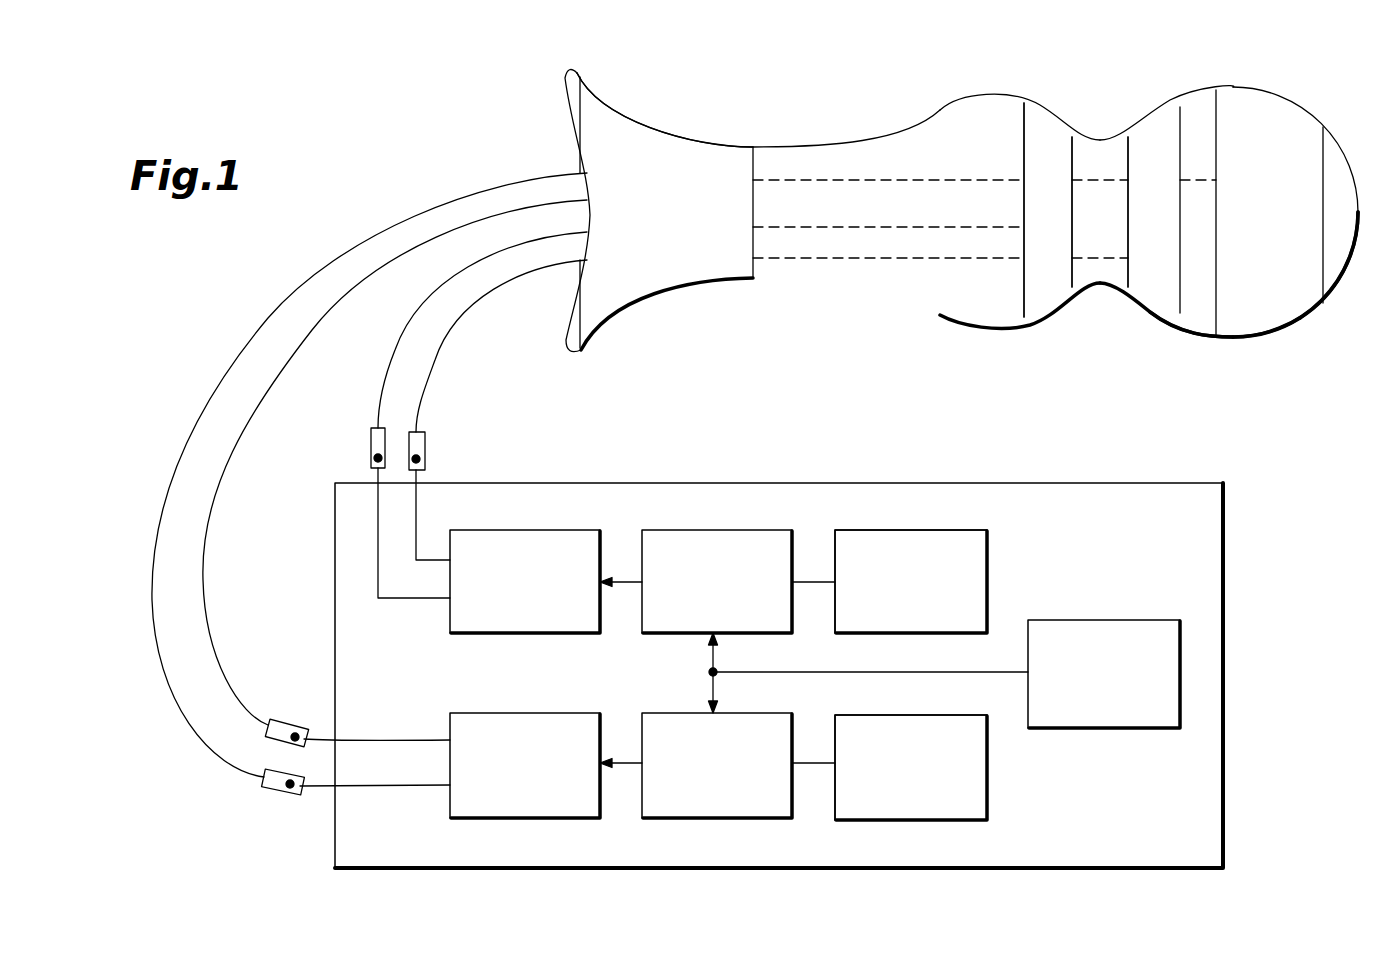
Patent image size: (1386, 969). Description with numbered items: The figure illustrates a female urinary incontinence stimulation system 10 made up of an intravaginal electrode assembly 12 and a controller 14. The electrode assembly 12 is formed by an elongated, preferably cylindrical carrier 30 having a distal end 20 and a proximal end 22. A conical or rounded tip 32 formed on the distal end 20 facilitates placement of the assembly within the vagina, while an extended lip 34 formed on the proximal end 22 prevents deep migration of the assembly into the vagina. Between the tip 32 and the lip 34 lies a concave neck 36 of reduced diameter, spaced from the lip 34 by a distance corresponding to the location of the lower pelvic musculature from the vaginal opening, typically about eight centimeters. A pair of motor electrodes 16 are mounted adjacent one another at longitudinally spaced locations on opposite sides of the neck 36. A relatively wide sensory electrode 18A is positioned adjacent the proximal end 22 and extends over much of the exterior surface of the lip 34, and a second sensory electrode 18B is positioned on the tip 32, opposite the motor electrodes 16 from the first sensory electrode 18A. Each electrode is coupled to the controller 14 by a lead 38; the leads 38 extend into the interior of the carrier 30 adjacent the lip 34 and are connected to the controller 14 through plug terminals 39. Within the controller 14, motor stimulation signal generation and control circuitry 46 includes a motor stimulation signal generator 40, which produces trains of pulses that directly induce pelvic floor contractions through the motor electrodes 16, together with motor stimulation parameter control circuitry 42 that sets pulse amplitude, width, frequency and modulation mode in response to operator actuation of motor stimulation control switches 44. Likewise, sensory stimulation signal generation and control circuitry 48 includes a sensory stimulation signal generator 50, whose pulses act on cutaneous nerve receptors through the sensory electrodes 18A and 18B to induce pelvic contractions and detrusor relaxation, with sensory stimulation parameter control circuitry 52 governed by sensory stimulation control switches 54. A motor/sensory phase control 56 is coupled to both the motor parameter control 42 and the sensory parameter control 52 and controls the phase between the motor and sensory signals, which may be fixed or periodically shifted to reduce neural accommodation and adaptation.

The female urinary incontinence stimulation system 10 is at (760, 430).
The intravaginal electrode assembly 12 is at (848, 143).
The controller 14 is at (838, 654).
The motor electrodes 16 is at (1047, 320).
The sensory electrode 18A is at (725, 282).
The sensory electrode 18B is at (1265, 340).
The distal end 20 is at (1336, 306).
The proximal end 22 is at (668, 134).
The carrier 30 is at (962, 100).
The tip 32 is at (1333, 130).
The extended lip 34 is at (562, 73).
The concave neck 36 is at (1100, 138).
The lead 38 is at (388, 228).
The plug terminals 39 is at (371, 452).
The motor stimulation signal generator 40 is at (522, 530).
The motor stimulation parameter control circuitry 42 is at (713, 530).
The motor stimulation control switches 44 is at (902, 530).
The motor stimulation signal generation and control circuitry 46 is at (1020, 566).
The sensory stimulation signal generation and control circuitry 48 is at (1022, 781).
The sensory stimulation signal generator 50 is at (535, 820).
The sensory stimulation parameter control circuitry 52 is at (715, 820).
The sensory stimulation control switches 54 is at (913, 822).
The motor/sensory phase control 56 is at (1123, 732).